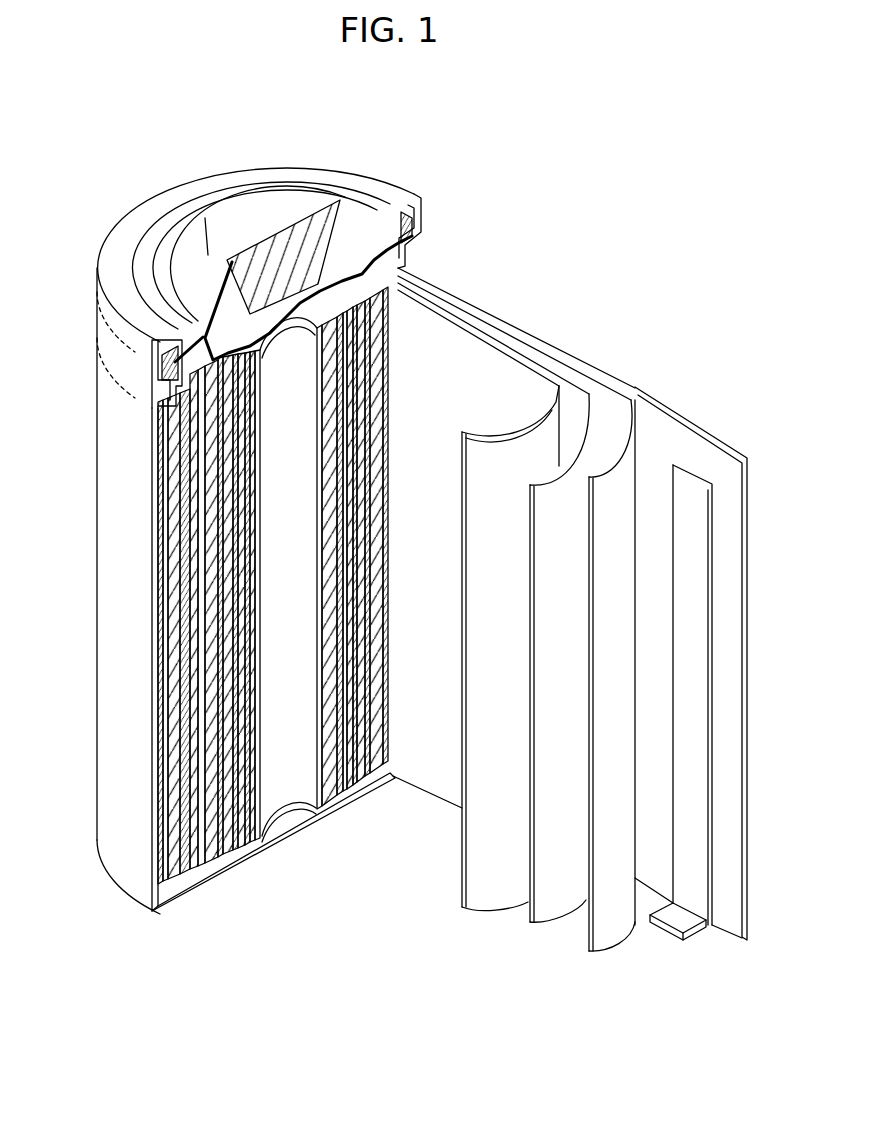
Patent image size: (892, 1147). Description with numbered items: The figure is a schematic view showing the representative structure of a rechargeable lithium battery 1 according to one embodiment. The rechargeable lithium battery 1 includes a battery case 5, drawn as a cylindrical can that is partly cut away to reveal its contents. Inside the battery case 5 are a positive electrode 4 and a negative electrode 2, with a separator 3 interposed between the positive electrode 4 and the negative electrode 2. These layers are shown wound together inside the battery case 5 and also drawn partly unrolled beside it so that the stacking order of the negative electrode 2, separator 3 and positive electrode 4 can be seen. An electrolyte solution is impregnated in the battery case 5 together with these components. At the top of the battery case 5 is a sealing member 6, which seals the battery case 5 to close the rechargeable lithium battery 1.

The rechargeable lithium battery 1 is at (401, 531).
The negative electrode 2 is at (702, 438).
The separator 3 is at (553, 384).
The positive electrode 4 is at (588, 418).
The battery case 5 is at (100, 602).
The sealing member 6 is at (262, 197).